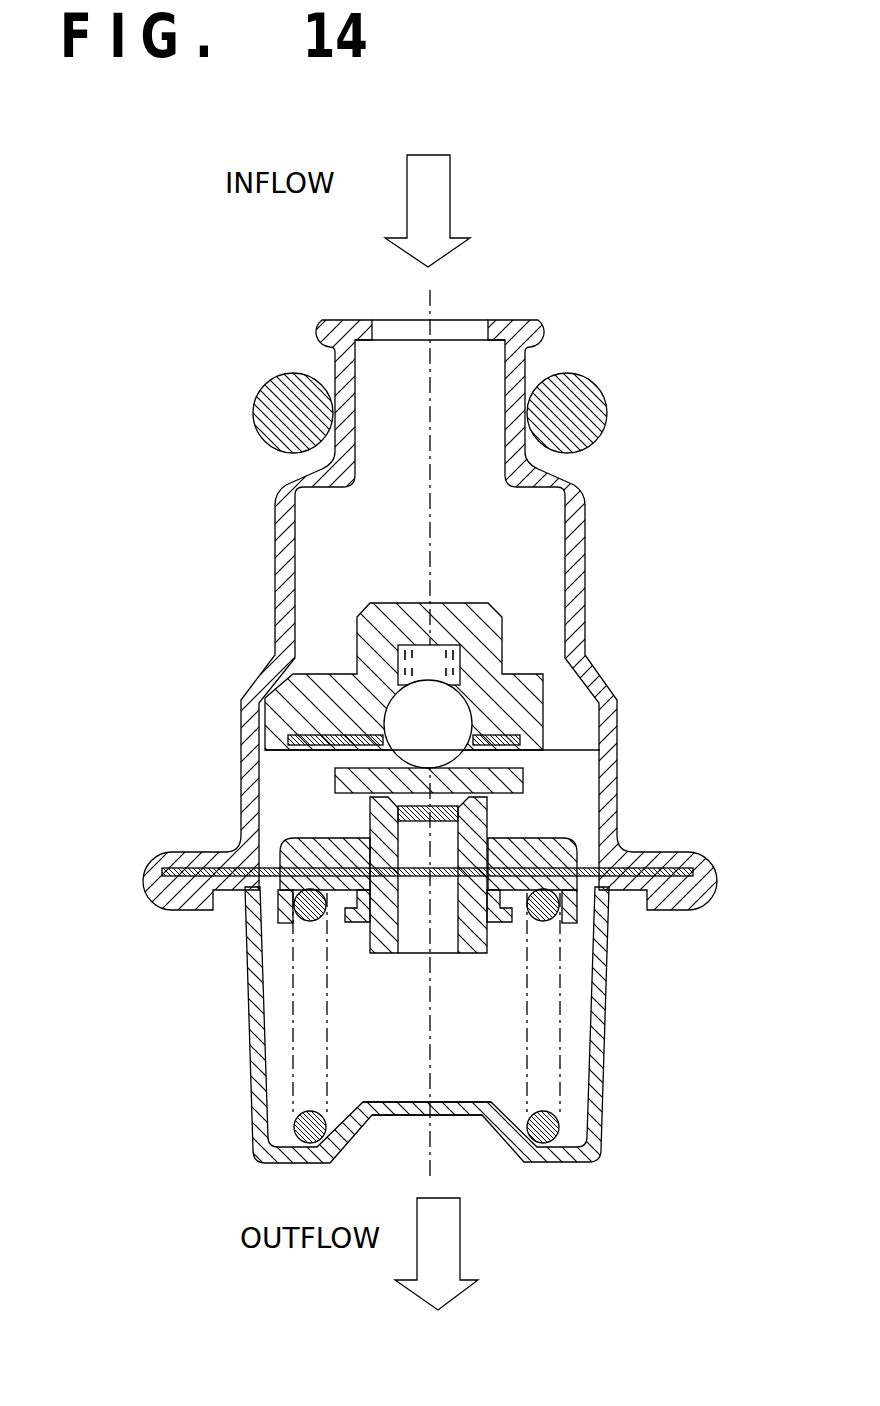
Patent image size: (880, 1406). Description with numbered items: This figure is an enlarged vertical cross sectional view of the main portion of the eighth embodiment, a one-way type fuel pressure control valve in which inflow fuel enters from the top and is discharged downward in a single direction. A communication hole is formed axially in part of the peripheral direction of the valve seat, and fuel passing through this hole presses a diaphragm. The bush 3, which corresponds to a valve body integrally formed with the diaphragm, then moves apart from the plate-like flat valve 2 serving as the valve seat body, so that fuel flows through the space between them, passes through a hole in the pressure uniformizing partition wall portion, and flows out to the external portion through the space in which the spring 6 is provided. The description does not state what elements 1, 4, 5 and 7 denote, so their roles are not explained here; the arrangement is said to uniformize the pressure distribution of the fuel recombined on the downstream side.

The upper case 1 is at (609, 683).
The plate-like flat valve 2 is at (523, 783).
The bush 3 is at (478, 925).
The stem guide 4 is at (385, 852).
The lower case 5 is at (265, 908).
The spring 6 is at (545, 1038).
The outlet plate 7 is at (450, 1110).